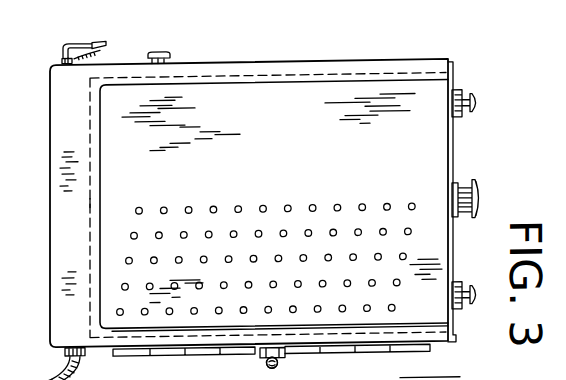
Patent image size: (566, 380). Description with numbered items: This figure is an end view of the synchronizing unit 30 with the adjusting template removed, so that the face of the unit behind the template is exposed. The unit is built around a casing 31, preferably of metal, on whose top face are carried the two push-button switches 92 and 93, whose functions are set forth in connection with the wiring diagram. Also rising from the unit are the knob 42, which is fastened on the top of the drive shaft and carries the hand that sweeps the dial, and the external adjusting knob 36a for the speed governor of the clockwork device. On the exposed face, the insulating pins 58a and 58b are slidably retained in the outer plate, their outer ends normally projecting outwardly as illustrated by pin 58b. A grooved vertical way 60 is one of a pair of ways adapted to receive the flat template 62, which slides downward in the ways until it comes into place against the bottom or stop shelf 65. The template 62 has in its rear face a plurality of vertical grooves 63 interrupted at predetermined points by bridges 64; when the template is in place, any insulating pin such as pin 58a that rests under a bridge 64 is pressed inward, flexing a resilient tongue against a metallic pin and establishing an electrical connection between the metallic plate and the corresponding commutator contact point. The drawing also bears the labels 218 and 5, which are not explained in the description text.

The synchronizing unit 30 is at (50, 271).
The casing 31 is at (447, 66).
The insulating pin 58a is at (247, 360).
The insulating pin 58b is at (311, 365).
The bridge 64 is at (279, 367).
The vertical groove 63 is at (340, 360).
The grooved vertical way 60 is at (439, 370).
The push-button switch 92 is at (478, 114).
The knob 42 is at (493, 213).
The push-button switch 93 is at (476, 299).
The external adjusting knob 36a is at (160, 54).
The conduit 218 is at (7, 143).
The template 62 is at (12, 378).
The base 5 is at (33, 374).
The stop shelf 65 is at (90, 203).